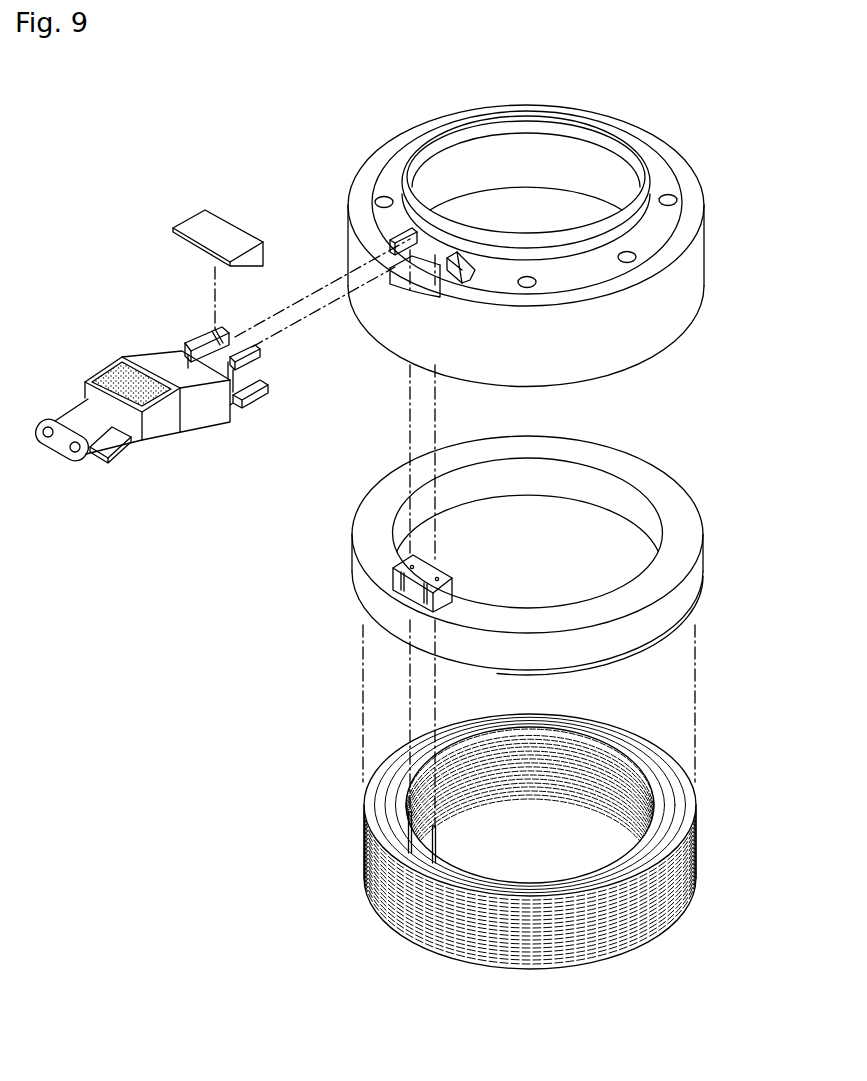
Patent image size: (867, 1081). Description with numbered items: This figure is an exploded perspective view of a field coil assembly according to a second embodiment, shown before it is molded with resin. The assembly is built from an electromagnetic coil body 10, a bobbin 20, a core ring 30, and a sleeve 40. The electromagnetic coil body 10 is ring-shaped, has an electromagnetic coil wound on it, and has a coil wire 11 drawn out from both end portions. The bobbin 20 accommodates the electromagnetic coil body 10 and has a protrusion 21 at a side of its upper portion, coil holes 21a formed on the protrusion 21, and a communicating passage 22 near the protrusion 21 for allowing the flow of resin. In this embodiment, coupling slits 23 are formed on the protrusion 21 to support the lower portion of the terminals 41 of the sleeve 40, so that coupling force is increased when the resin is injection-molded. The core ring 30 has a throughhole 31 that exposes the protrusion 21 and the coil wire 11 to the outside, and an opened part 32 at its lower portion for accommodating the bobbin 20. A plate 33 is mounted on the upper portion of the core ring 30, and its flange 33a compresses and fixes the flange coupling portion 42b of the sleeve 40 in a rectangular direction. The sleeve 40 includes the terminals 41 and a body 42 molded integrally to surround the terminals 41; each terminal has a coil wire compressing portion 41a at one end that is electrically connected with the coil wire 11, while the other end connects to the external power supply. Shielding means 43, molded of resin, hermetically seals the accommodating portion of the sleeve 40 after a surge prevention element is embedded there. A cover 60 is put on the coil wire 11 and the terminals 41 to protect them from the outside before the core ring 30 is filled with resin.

The electromagnetic coil body 10 is at (540, 841).
The coil wire 11 is at (408, 813).
The bobbin 20 is at (515, 574).
The protrusion 21 is at (404, 598).
The coil holes 21a is at (416, 568).
The communicating passage 22 is at (458, 602).
The coupling slits 23 is at (400, 582).
The core ring 30 is at (550, 260).
The throughhole 31 is at (395, 268).
The opened part 32 is at (675, 345).
The plate 33 is at (668, 218).
The flange 33a is at (453, 282).
The sleeve 40 is at (157, 320).
The terminals 41 is at (210, 334).
The coil wire compressing portion 41a is at (228, 336).
The body 42 is at (157, 389).
The flange coupling portion 42b is at (260, 393).
The shielding means 43 is at (120, 374).
The cover 60 is at (225, 232).